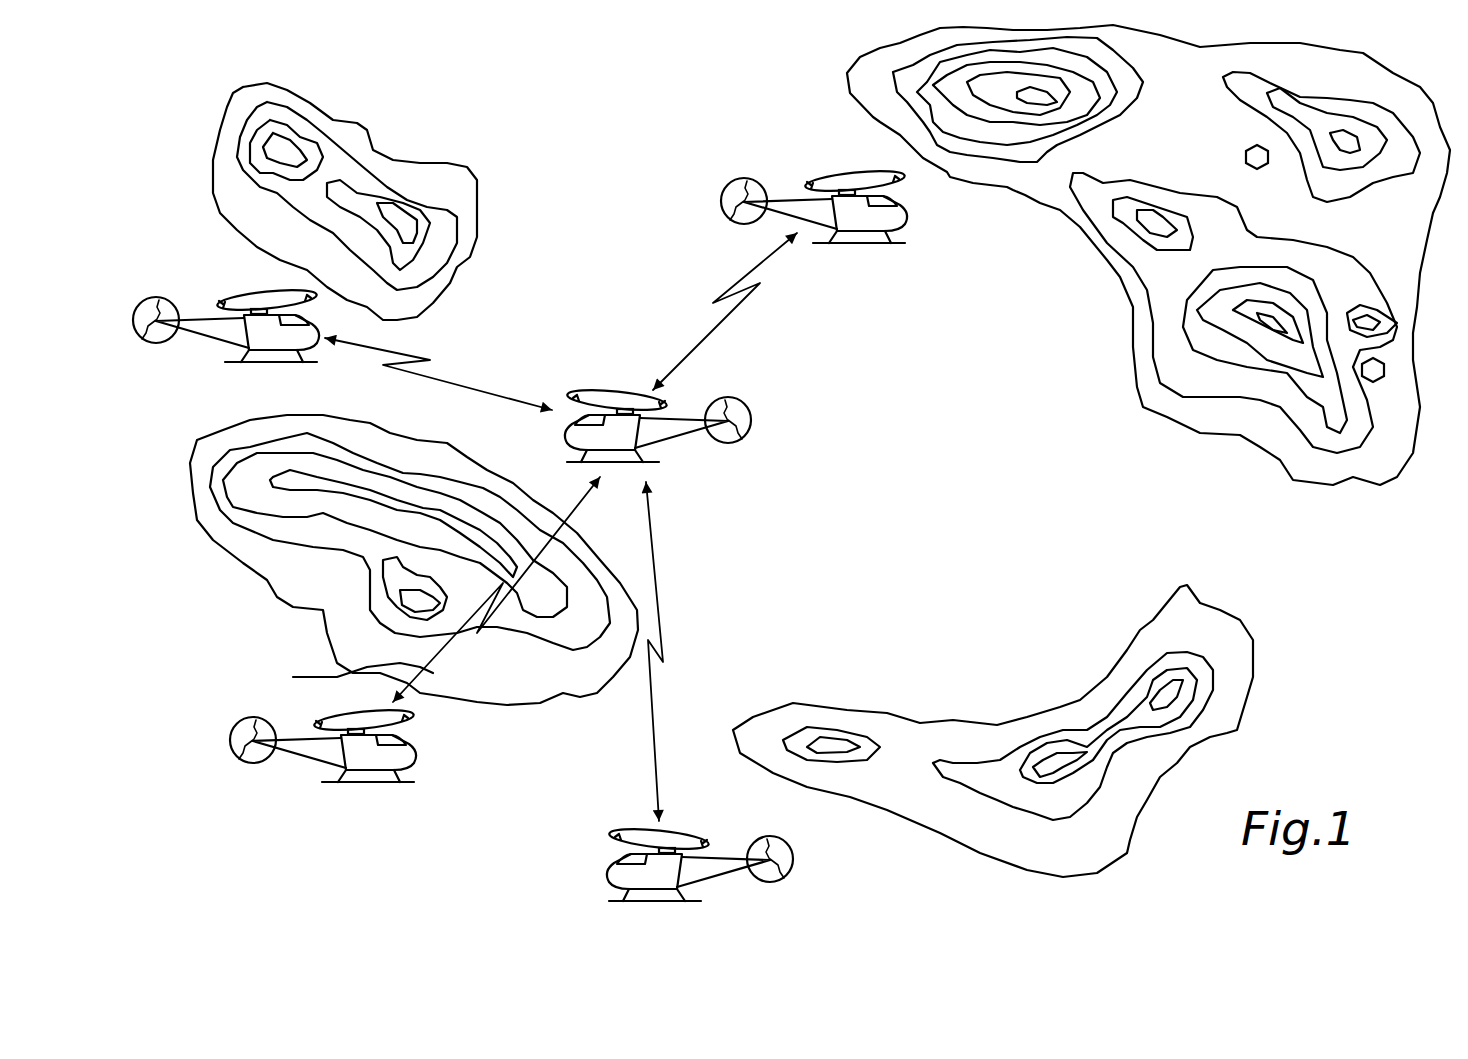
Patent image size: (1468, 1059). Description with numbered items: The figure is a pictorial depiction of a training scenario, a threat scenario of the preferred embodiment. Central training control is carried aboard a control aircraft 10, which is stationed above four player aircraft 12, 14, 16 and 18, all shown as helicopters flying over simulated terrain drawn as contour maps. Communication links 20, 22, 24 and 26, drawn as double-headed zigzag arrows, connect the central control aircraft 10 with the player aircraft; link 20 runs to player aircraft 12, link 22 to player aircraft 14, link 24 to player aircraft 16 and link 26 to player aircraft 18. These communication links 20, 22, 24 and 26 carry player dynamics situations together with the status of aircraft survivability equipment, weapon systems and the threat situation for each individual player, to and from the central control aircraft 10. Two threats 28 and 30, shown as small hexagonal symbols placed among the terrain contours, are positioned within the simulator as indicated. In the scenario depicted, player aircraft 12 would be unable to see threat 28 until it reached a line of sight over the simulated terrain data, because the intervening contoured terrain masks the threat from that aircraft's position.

The control aircraft 10 is at (675, 457).
The player aircraft 12 is at (882, 237).
The player aircraft 14 is at (226, 286).
The player aircraft 16 is at (323, 790).
The player aircraft 18 is at (770, 872).
The communication link 20 is at (753, 270).
The communication link 22 is at (390, 346).
The communication link 24 is at (373, 589).
The communication link 26 is at (657, 732).
The threat 28 is at (1257, 157).
The threat 30 is at (1373, 370).